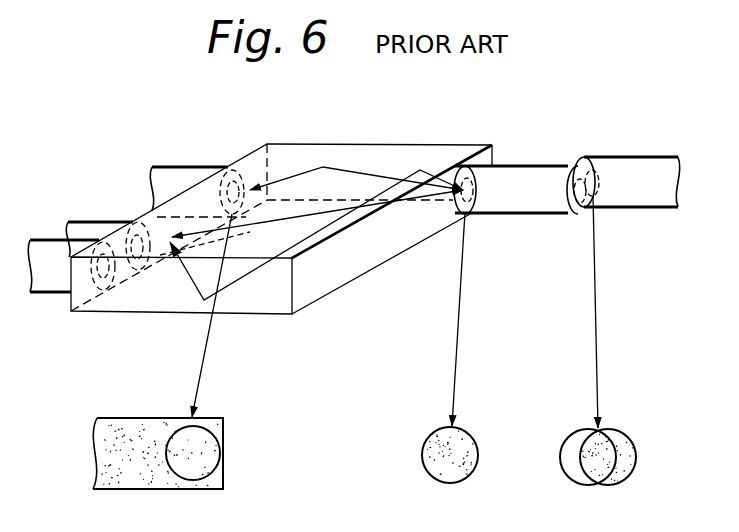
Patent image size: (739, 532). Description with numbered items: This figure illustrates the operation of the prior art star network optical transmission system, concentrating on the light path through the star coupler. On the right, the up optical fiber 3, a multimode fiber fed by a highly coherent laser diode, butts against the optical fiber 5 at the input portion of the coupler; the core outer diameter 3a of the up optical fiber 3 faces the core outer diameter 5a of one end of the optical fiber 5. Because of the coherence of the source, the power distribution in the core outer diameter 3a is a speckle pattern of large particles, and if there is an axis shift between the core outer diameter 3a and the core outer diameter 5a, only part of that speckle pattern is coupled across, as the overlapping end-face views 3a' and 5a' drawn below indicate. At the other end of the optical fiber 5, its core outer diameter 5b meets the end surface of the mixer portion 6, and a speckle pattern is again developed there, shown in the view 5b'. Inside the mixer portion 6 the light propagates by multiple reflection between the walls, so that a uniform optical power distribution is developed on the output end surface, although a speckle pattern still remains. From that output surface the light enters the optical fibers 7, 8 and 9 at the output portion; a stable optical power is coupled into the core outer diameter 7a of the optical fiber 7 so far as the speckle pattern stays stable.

The up optical fiber 3 is at (631, 157).
The core outer diameter of the up optical fiber 3a is at (615, 219).
The optical fiber at the input portion 5 is at (542, 166).
The core outer diameter of one end of the input optical fiber 5a is at (561, 224).
The core outer diameter of the other end of the input optical fiber 5b is at (481, 224).
The mixer portion 6 is at (251, 318).
The optical fiber at the output portion 7 is at (188, 167).
The core outer diameter of the output optical fiber 7a is at (238, 170).
The optical fiber at the output portion 8 is at (98, 222).
The optical fiber at the output portion 9 is at (43, 240).
The image of core end face 5b 5b' is at (434, 347).
The image of core end face 5a 5a' is at (576, 434).
The image of core end face 3a 3a' is at (627, 340).